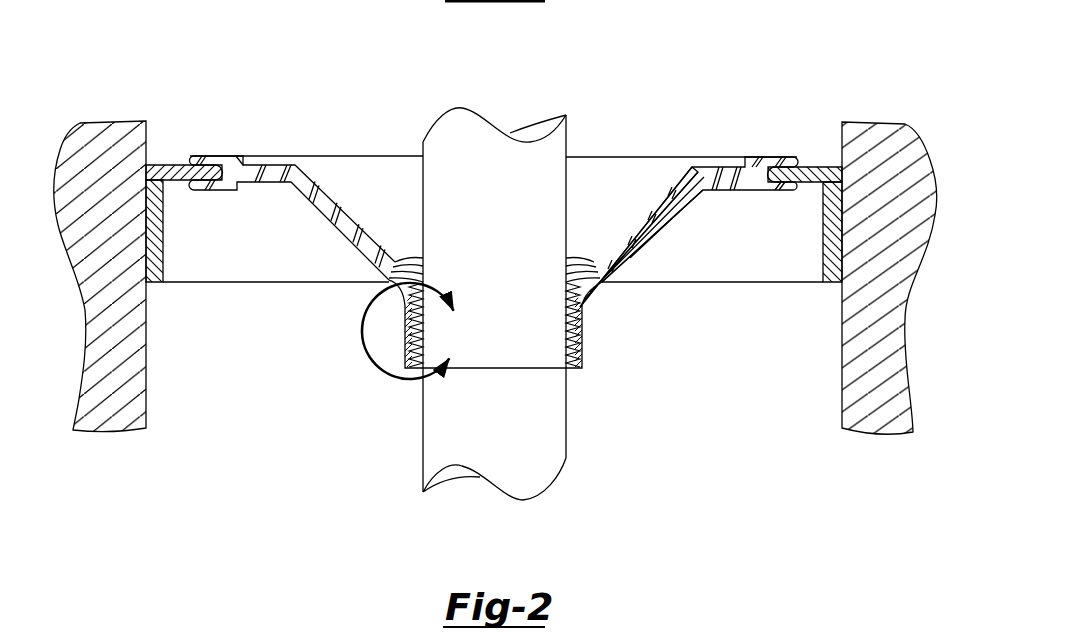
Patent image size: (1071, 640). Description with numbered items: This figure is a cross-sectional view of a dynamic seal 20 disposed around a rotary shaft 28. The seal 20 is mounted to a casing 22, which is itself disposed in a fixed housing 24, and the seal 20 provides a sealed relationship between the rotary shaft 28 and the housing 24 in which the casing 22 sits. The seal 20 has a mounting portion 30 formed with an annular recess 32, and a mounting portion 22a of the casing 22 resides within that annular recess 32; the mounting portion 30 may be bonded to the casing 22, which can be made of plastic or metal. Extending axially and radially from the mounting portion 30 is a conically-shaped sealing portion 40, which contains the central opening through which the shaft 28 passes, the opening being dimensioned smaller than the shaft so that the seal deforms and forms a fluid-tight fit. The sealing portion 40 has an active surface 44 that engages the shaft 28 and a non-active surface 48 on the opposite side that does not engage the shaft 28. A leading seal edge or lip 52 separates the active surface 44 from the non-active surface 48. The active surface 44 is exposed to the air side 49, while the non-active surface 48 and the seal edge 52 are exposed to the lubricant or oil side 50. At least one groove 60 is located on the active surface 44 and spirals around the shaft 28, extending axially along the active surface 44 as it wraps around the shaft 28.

The dynamic seal 20 is at (686, 70).
The casing 22 is at (831, 280).
The mounting portion of casing 22a is at (785, 172).
The fixed housing 24 is at (847, 408).
The rotary shaft 28 is at (559, 458).
The mounting portion 30 is at (231, 162).
The annular recess 32 is at (226, 183).
The conically-shaped sealing portion 40 is at (668, 217).
The active side/surface 44 is at (620, 238).
The non-active side/surface 48 is at (638, 257).
The air side 49 is at (359, 134).
The lubricant side 50 is at (250, 336).
The leading seal edge or lip 52 is at (584, 370).
The groove 60 is at (558, 328).